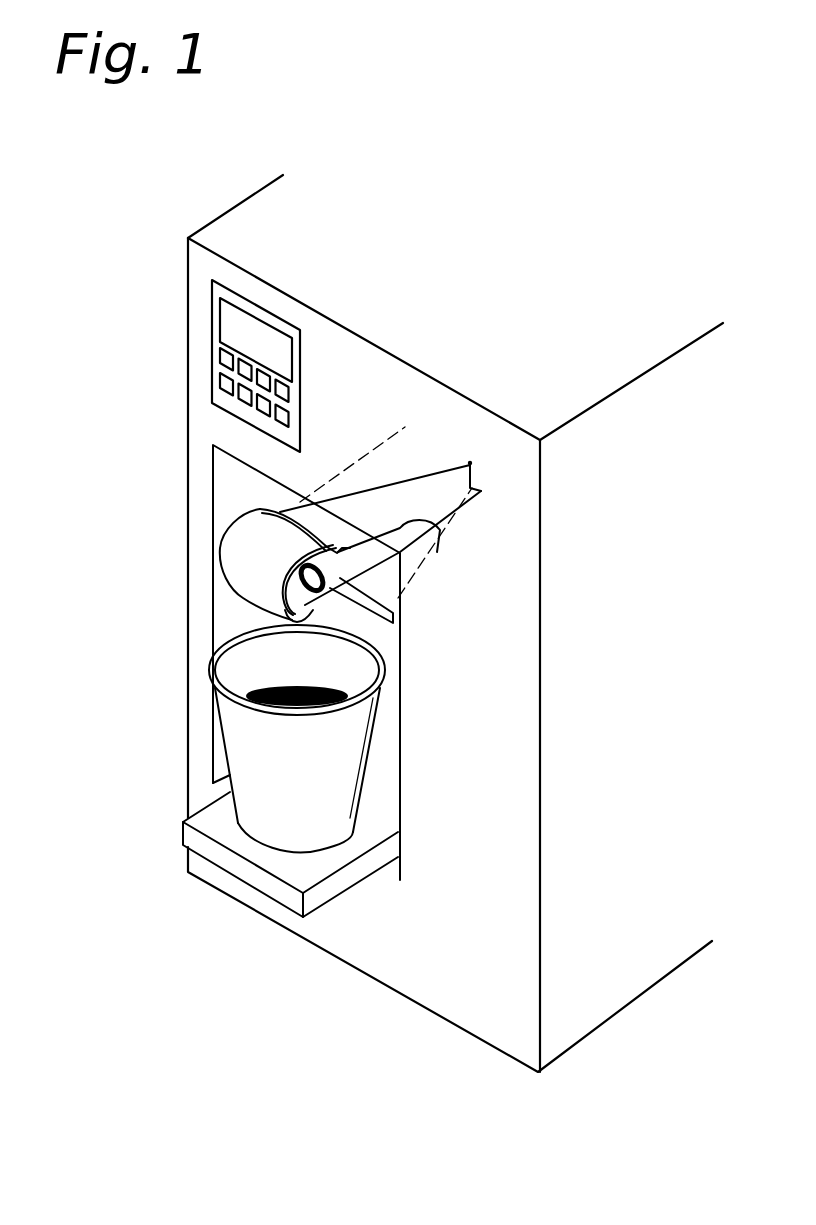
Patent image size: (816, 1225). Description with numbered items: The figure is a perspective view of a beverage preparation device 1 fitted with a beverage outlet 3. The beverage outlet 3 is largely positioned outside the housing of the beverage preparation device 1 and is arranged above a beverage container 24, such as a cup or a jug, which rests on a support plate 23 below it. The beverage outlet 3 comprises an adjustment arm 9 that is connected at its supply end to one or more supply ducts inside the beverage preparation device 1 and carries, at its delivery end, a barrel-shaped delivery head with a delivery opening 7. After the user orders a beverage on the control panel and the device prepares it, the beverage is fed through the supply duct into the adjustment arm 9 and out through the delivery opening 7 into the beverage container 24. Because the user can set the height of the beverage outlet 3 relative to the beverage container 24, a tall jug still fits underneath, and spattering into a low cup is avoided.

The beverage preparation device 1 is at (162, 310).
The beverage outlet 3 is at (331, 493).
The delivery opening 7 is at (313, 611).
The adjustment arm 9 is at (357, 563).
The support plate 23 is at (252, 873).
The beverage container 24 is at (237, 738).